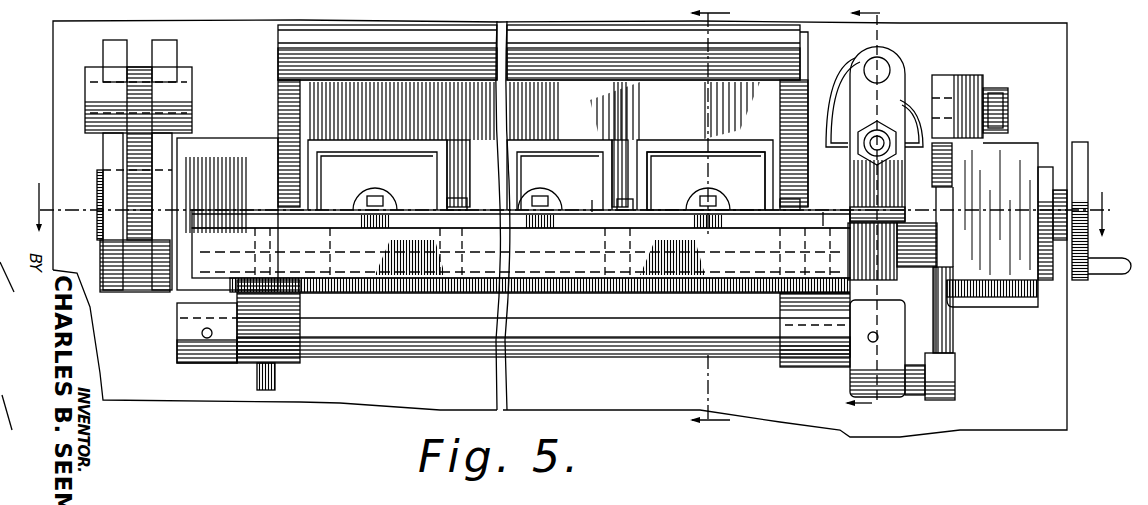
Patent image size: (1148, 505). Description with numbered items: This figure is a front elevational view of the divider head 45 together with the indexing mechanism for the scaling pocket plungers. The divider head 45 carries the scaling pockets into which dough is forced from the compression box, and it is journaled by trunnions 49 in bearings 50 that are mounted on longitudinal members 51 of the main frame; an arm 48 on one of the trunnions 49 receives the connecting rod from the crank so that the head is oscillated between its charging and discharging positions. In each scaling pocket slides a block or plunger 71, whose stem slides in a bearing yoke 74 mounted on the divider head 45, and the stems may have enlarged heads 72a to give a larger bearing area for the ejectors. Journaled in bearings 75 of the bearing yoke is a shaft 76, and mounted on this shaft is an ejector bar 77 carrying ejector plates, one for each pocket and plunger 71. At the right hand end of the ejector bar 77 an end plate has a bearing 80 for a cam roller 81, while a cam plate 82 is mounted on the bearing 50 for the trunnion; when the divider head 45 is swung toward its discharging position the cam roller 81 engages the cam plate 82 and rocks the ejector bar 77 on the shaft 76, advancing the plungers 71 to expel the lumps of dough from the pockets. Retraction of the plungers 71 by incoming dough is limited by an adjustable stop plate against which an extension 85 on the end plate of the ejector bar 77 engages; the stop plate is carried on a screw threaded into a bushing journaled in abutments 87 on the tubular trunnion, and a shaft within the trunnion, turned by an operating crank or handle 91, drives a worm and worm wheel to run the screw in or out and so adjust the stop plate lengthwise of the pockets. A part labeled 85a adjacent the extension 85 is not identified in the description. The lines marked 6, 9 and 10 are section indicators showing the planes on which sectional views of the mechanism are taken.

The divider head 45 is at (287, 115).
The arm 48 is at (108, 149).
The trunnions 49 is at (100, 184).
The bearings 50 is at (1030, 148).
The longitudinal members 51 is at (1015, 300).
The block or plunger 71 is at (735, 180).
The enlarged heads 72a is at (378, 195).
The bearing yoke 74 is at (592, 212).
The bearings 75 is at (300, 363).
The shaft 76 is at (407, 345).
The ejector bar 77 is at (513, 214).
The bearing 80 is at (905, 393).
The cam roller 81 is at (955, 362).
The cam plate 82 is at (946, 78).
The extension 85 is at (905, 228).
The nut 85a is at (877, 140).
The abutments or extensions 87 is at (842, 120).
The operating crank or handle 91 is at (1086, 162).
The section line 6 is at (570, 210).
The section line 9 is at (710, 220).
The section line 10 is at (878, 213).